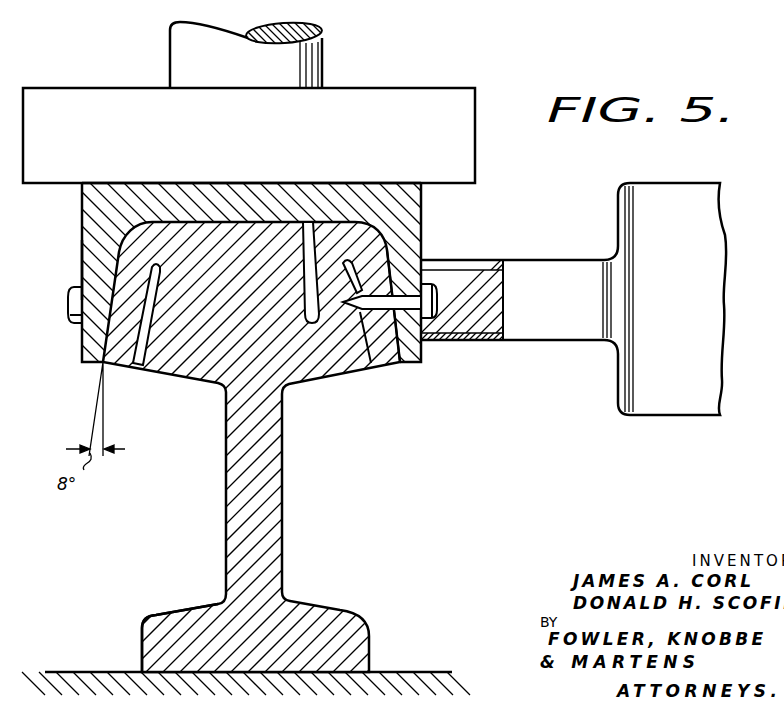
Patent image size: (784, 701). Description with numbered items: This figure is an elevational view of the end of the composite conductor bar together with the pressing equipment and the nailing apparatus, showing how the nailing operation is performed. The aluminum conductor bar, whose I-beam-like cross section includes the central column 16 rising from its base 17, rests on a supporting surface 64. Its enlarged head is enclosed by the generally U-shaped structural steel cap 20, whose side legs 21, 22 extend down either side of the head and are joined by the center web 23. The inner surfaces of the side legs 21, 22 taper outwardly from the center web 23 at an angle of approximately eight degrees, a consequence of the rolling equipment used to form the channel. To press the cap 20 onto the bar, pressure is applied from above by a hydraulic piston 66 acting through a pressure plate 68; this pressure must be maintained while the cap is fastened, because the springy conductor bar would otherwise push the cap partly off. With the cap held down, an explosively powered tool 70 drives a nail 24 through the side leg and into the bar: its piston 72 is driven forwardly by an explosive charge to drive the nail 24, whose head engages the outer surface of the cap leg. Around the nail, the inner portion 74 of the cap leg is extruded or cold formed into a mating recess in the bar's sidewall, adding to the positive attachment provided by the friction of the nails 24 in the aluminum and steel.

The central column 16 is at (227, 500).
The rail base flange 17 is at (166, 618).
The structural steel channel or cap 20 is at (72, 207).
The side leg of the cap 21 is at (90, 263).
The side leg of the cap 22 is at (421, 230).
The center web 23 is at (318, 183).
The nail 24 is at (68, 303).
The supporting surface 64 is at (108, 672).
The hydraulic piston 66 is at (170, 48).
The pressure plate 68 is at (72, 70).
The explosively powered tool 70 is at (648, 183).
The piston 72 is at (443, 270).
The inner portion of the cap leg 74 is at (384, 363).